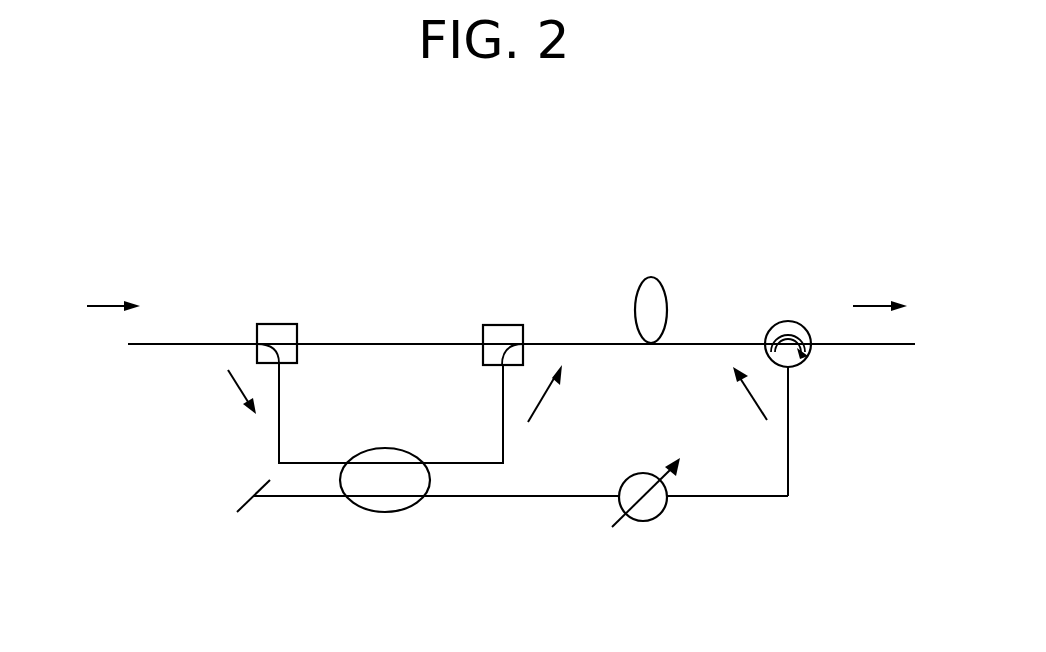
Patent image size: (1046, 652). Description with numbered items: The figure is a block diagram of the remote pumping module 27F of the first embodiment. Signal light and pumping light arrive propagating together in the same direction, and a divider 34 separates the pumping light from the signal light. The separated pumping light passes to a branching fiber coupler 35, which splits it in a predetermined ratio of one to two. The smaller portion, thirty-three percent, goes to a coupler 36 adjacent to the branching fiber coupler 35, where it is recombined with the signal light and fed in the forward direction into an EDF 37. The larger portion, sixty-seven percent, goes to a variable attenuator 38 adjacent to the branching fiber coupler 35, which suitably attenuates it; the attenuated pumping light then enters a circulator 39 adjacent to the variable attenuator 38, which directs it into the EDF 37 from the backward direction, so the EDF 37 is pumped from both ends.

The remote pumping module 27F is at (632, 181).
The divider 34 is at (302, 358).
The branching fiber coupler 35 is at (357, 503).
The coupler 36 is at (483, 335).
The EDF 37 is at (667, 292).
The variable attenuator 38 is at (665, 510).
The circulator 39 is at (808, 358).